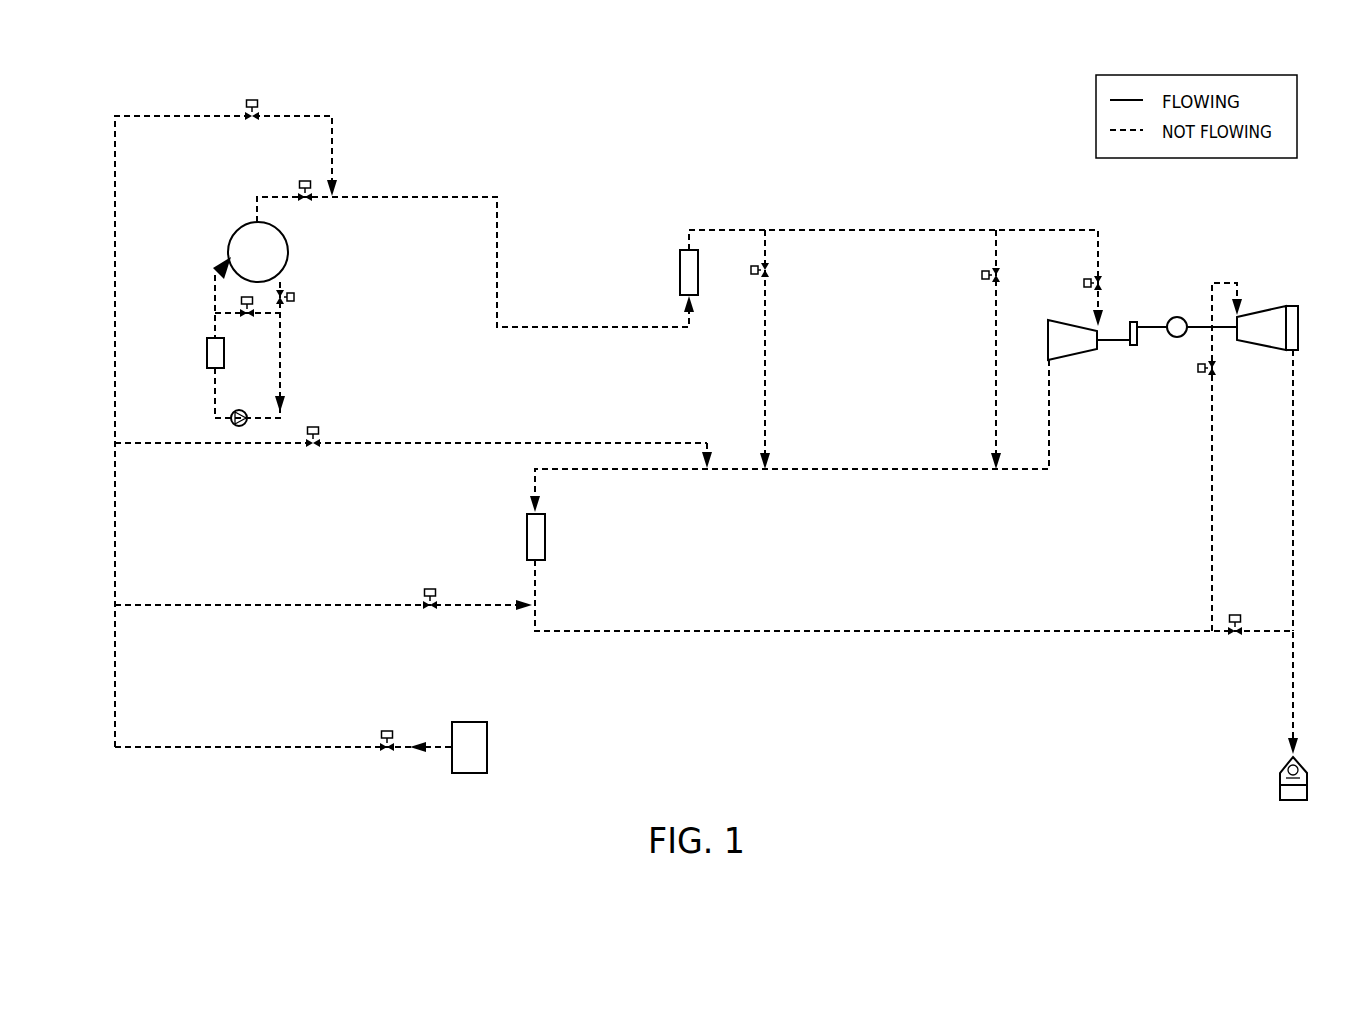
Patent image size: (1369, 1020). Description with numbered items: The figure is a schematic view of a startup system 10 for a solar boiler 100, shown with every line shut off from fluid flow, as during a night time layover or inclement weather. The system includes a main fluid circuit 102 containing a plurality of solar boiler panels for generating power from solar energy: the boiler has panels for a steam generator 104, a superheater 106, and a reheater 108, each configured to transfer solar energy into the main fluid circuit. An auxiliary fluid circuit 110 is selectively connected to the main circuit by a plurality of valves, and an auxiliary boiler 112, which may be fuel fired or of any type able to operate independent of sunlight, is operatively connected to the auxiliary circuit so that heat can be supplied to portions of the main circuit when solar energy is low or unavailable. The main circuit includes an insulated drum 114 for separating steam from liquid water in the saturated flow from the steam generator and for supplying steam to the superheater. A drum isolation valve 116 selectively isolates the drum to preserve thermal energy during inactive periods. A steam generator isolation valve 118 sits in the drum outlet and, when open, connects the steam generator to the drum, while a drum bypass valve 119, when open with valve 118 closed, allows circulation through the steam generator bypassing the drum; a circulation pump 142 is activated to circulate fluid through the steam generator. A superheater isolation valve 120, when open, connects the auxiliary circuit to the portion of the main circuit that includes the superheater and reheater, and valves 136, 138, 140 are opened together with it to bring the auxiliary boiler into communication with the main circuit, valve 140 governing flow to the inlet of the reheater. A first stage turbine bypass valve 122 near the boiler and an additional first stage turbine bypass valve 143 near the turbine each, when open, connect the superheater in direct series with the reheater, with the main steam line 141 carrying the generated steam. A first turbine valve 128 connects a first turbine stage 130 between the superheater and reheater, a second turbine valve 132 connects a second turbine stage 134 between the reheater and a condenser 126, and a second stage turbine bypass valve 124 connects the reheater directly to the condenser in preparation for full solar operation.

The startup system 10 is at (792, 130).
The solar boiler 100 is at (768, 662).
The main fluid circuit 102 is at (458, 197).
The steam generator 104 is at (207, 352).
The superheater 106 is at (680, 275).
The reheater 108 is at (527, 532).
The auxiliary fluid circuit 110 is at (115, 213).
The auxiliary boiler 112 is at (487, 745).
The drum 114 is at (273, 245).
The drum isolation valve 116 is at (305, 181).
The steam generator isolation valve 118 is at (296, 298).
The drum bypass valve 119 is at (240, 307).
The superheater isolation valve 120 is at (253, 100).
The first stage turbine bypass valve 122 is at (781, 272).
The second stage turbine bypass valve 124 is at (1236, 640).
The condenser 126 is at (1307, 782).
The first turbine valve 128 is at (1104, 283).
The first turbine stage 130 is at (1062, 329).
The second turbine valve 132 is at (1198, 372).
The second turbine stage 134 is at (1265, 320).
The valve 136 is at (387, 731).
The valve 138 is at (429, 589).
The valve 140 is at (317, 427).
The main steam line 141 is at (952, 200).
The circulation pump 142 is at (241, 409).
The additional first stage turbine bypass valve 143 is at (1002, 274).